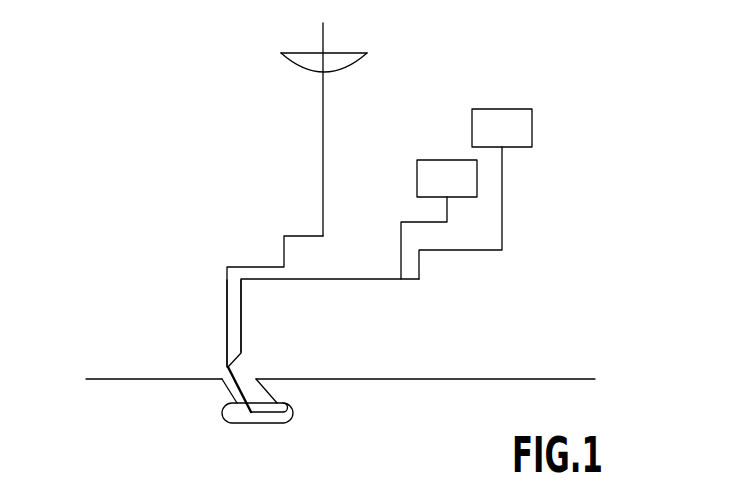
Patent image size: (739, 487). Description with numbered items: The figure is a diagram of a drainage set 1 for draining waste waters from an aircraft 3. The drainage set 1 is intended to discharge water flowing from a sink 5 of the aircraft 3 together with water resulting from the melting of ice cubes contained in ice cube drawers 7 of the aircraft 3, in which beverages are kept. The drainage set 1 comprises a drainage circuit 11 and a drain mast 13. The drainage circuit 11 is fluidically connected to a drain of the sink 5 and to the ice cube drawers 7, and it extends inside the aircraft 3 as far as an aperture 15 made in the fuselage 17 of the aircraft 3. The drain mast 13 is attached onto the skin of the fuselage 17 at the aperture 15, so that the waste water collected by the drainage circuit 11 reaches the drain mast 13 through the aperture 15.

The drainage set 1 is at (530, 282).
The aircraft 3 is at (138, 365).
The sink 5 is at (345, 53).
The ice cube drawers 7 is at (515, 109).
The drainage circuit 11 is at (260, 296).
The drain mast 13 is at (226, 413).
The aperture 15 is at (248, 374).
The fuselage 17 is at (425, 380).